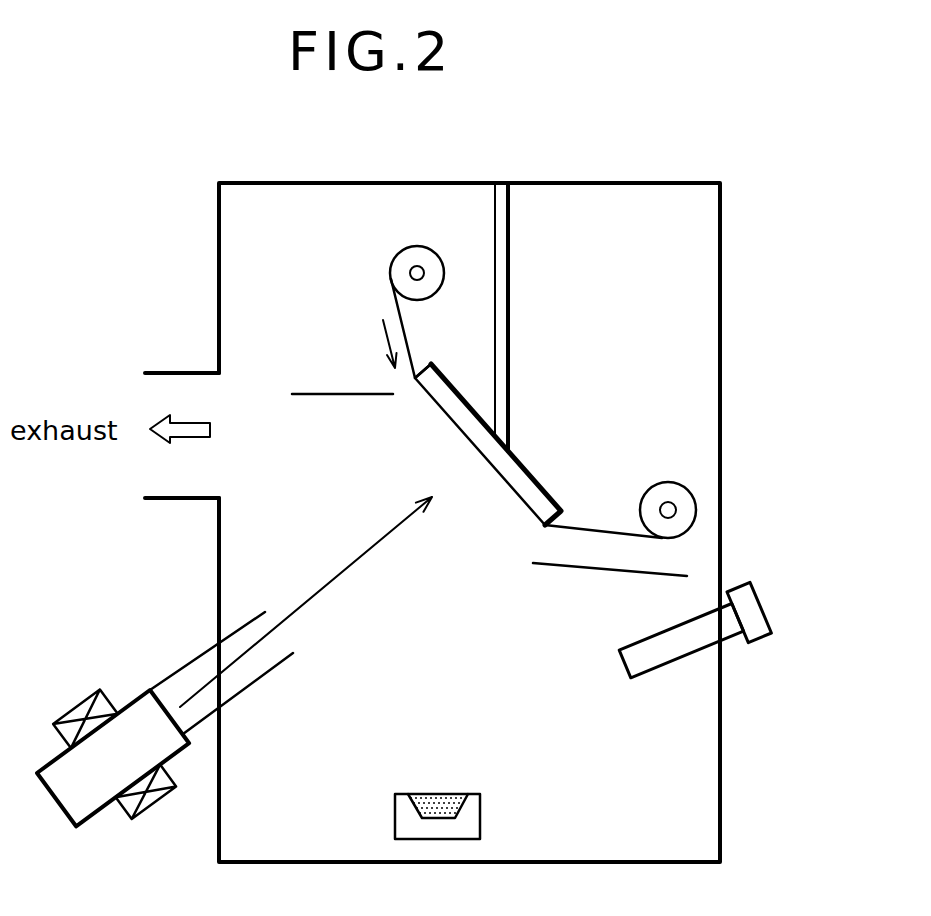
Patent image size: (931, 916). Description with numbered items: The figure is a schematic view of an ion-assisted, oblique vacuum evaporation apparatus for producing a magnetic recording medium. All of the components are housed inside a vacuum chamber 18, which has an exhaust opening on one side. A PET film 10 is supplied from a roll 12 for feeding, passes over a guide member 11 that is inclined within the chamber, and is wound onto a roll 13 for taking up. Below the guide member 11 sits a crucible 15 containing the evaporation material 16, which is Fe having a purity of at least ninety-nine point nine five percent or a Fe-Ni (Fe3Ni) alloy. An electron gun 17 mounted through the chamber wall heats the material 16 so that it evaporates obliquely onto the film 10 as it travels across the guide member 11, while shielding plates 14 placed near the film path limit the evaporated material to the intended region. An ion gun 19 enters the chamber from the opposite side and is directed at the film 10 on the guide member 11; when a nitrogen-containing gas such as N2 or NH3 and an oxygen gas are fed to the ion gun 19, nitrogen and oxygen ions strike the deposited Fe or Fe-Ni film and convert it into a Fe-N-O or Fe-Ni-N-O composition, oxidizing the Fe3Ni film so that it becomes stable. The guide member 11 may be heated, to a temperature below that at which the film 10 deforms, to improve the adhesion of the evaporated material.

The PET film 10 is at (397, 312).
The guide member 11 is at (522, 457).
The roll for feeding 12 is at (417, 273).
The roll for taking up 13 is at (668, 510).
The shielding plate 14 is at (322, 395).
The crucible 15 is at (480, 810).
The Fe or Fe-Ni alloy 16 is at (442, 793).
The electron gun 17 is at (765, 608).
The vacuum chamber 18 is at (722, 745).
The ion gun 19 is at (130, 702).